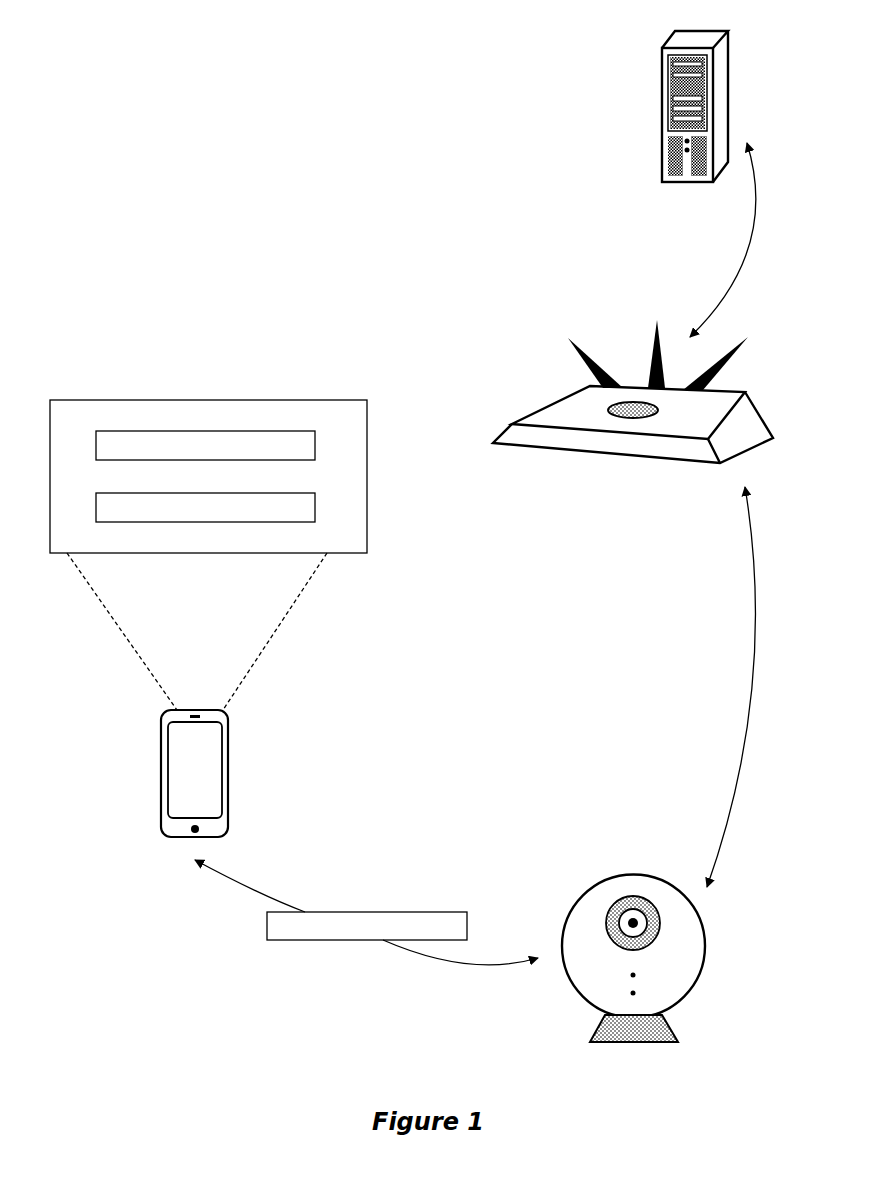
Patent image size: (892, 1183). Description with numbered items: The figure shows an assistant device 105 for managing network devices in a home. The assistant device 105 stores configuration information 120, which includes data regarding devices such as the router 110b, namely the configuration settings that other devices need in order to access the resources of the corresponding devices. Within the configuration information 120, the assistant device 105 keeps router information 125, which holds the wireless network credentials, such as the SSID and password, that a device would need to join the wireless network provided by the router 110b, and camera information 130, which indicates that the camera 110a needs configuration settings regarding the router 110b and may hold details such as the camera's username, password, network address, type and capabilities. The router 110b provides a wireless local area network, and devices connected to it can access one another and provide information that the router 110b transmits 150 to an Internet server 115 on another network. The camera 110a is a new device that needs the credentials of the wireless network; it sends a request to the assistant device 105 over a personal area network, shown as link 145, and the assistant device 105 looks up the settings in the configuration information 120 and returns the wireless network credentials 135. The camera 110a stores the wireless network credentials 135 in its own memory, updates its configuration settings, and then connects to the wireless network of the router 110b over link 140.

The assistant device 105 is at (228, 745).
The camera 110a is at (612, 877).
The router 110b is at (733, 392).
The Internet server 115 is at (713, 28).
The configuration information 120 is at (208, 540).
The router information 125 is at (205, 445).
The camera information 130 is at (205, 507).
The wireless network credentials 135 is at (392, 912).
The communication link between camera and router 140 is at (758, 632).
The communication link between mobile device and Wi-Fi credentials 145 is at (253, 885).
The transmission to Internet server 150 is at (758, 203).